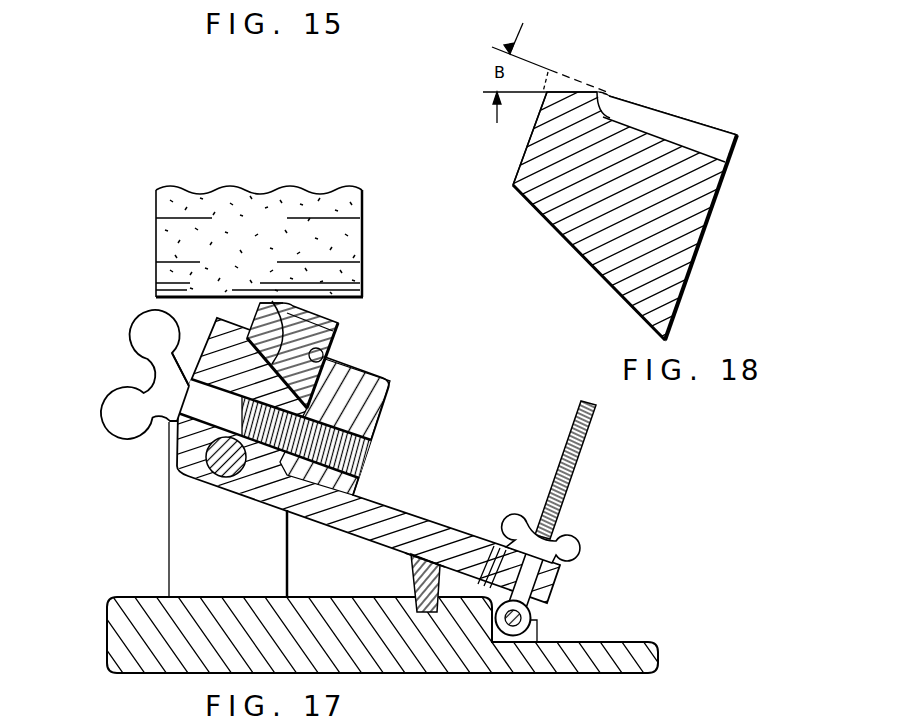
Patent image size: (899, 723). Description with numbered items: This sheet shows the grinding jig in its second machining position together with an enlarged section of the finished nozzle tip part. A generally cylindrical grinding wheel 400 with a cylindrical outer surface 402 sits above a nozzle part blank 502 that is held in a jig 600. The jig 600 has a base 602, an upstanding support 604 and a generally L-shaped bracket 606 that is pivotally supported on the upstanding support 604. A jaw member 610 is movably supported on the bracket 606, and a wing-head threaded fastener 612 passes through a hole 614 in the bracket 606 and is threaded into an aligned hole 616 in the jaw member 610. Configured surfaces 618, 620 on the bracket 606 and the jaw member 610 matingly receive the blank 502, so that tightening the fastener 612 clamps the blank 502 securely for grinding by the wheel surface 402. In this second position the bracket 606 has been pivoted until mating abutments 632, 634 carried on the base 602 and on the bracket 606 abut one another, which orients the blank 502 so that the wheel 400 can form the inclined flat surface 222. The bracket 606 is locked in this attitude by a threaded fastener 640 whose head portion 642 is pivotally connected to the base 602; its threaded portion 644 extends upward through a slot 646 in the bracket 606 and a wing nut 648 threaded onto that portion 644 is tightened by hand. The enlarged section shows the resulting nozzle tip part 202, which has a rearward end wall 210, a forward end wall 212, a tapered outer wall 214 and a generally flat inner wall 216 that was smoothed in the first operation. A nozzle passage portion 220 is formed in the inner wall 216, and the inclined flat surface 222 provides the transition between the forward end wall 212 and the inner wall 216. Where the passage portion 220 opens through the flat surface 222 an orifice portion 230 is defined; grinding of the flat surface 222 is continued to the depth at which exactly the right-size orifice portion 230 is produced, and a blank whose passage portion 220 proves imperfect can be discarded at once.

In FIG. 17, the grinding wheel 400 is at (150, 215).
In FIG. 17, the outer surface 402 is at (365, 297).
In FIG. 17, the inclined flat surface 222 is at (272, 303).
In FIG. 18, the inclined flat surface 222 is at (585, 91).
In FIG. 17, the configured surface 618 is at (258, 306).
In FIG. 17, the inner wall 216 is at (318, 313).
In FIG. 18, the inner wall 216 is at (729, 132).
In FIG. 17, the nozzle part blank 502 is at (346, 346).
In FIG. 17, the configured surface 620 is at (328, 357).
In FIG. 17, the jaw member 610 is at (372, 393).
In FIG. 17, the jig 600 is at (434, 412).
In FIG. 17, the aligned hole 616 is at (367, 467).
In FIG. 17, the L-shaped bracket 606 is at (407, 511).
In FIG. 17, the upstanding support 604 is at (170, 546).
In FIG. 17, the abutment 634 is at (421, 567).
In FIG. 17, the abutment 632 is at (410, 583).
In FIG. 17, the base 602 is at (110, 641).
In FIG. 17, the threaded portion 644 is at (585, 449).
In FIG. 17, the slot 646 is at (505, 557).
In FIG. 17, the threaded fastener 640 is at (560, 522).
In FIG. 17, the wing nut 648 is at (573, 550).
In FIG. 17, the head portion 642 is at (525, 626).
In FIG. 17, the wing-head threaded fastener 612 is at (125, 420).
In FIG. 17, the hole 614 is at (152, 370).
In FIG. 18, the orifice portion 230 is at (607, 93).
In FIG. 18, the nozzle passage portion 220 is at (643, 128).
In FIG. 18, the nozzle tip part 202 is at (711, 110).
In FIG. 18, the forward end wall 212 is at (523, 152).
In FIG. 18, the rearward end wall 210 is at (710, 222).
In FIG. 18, the tapered outer wall 214 is at (597, 275).